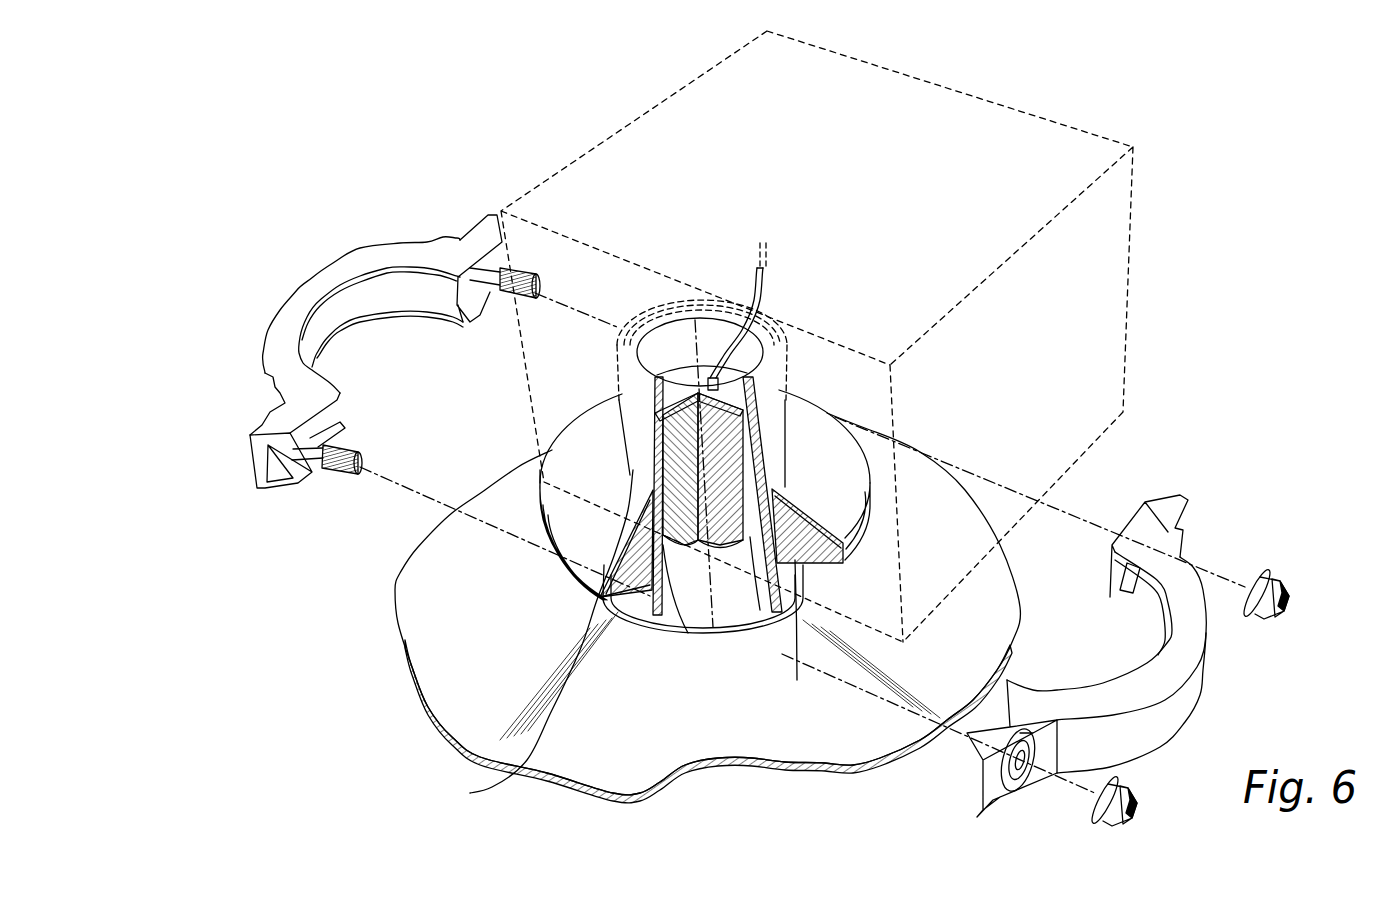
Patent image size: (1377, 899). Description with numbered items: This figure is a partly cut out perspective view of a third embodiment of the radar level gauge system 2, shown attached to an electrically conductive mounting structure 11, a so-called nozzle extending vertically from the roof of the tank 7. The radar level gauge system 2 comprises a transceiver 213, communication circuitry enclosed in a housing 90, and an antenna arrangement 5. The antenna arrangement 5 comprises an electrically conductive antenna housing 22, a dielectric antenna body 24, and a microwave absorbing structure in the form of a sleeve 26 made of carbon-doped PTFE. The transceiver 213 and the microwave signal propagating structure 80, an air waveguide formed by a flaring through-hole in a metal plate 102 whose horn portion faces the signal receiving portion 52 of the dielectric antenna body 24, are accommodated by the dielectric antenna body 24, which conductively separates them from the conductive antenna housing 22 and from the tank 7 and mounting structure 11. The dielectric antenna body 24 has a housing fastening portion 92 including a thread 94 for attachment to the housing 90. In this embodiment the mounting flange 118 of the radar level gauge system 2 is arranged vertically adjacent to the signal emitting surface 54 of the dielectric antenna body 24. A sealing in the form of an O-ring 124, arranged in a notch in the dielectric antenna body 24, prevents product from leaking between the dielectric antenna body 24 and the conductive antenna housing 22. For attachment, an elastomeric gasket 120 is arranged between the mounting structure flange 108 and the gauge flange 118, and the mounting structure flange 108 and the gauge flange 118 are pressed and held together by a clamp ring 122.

The radar level gauge system 2 is at (527, 385).
The antenna arrangement 5 is at (782, 428).
The tank 7 is at (760, 733).
The mounting structure 11 is at (643, 617).
The conductive antenna housing 22 is at (603, 587).
The dielectric antenna body 24 is at (536, 644).
The sleeve 26 is at (768, 503).
The signal receiving portion 52 is at (692, 416).
The signal emitting surface 54 is at (707, 560).
The microwave signal propagating structure 80 is at (682, 475).
The housing 90 is at (1135, 300).
The housing fastening portion 92 is at (654, 372).
The thread 94 is at (648, 407).
The metal plate 102 is at (920, 383).
The mounting structure flange 108 is at (813, 600).
The mounting flange 118 is at (833, 416).
The elastomeric gasket 120 is at (772, 635).
The clamp ring 122 is at (297, 288).
The O-ring 124 is at (743, 517).
The transceiver 213 is at (735, 393).